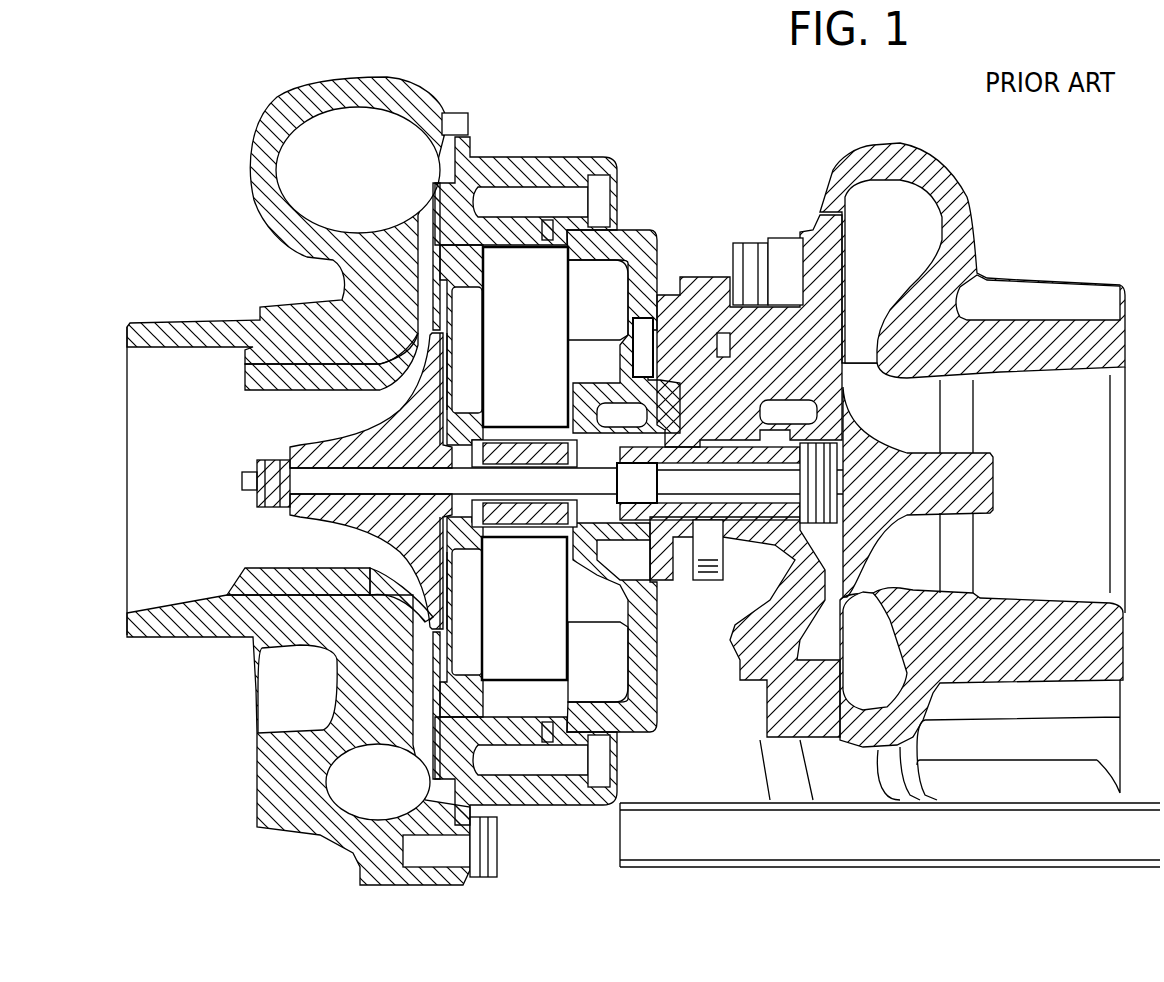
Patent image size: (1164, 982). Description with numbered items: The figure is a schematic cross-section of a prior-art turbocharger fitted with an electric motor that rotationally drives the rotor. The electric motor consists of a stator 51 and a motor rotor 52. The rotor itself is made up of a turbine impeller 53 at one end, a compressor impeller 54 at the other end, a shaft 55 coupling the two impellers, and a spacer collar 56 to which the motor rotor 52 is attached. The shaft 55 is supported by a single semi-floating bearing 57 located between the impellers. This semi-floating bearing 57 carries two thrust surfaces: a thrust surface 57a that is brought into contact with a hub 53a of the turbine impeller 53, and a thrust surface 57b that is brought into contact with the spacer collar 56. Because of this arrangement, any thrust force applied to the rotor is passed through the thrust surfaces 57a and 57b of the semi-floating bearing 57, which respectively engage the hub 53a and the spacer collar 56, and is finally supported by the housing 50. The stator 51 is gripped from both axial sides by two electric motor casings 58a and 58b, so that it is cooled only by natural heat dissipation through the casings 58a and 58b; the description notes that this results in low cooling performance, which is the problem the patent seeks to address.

The housing 50 is at (712, 327).
The stator 51 is at (545, 326).
The motor rotor 52 is at (503, 523).
The turbine impeller 53 is at (890, 463).
The hub 53a is at (795, 430).
The compressor impeller 54 is at (327, 457).
The shaft 55 is at (637, 483).
The spacer collar 56 is at (503, 460).
The semi-floating bearing 57 is at (703, 447).
The thrust surface 57a is at (810, 510).
The thrust surface 57b is at (615, 510).
The electric motor casing 58a is at (485, 160).
The electric motor casing 58b is at (625, 247).